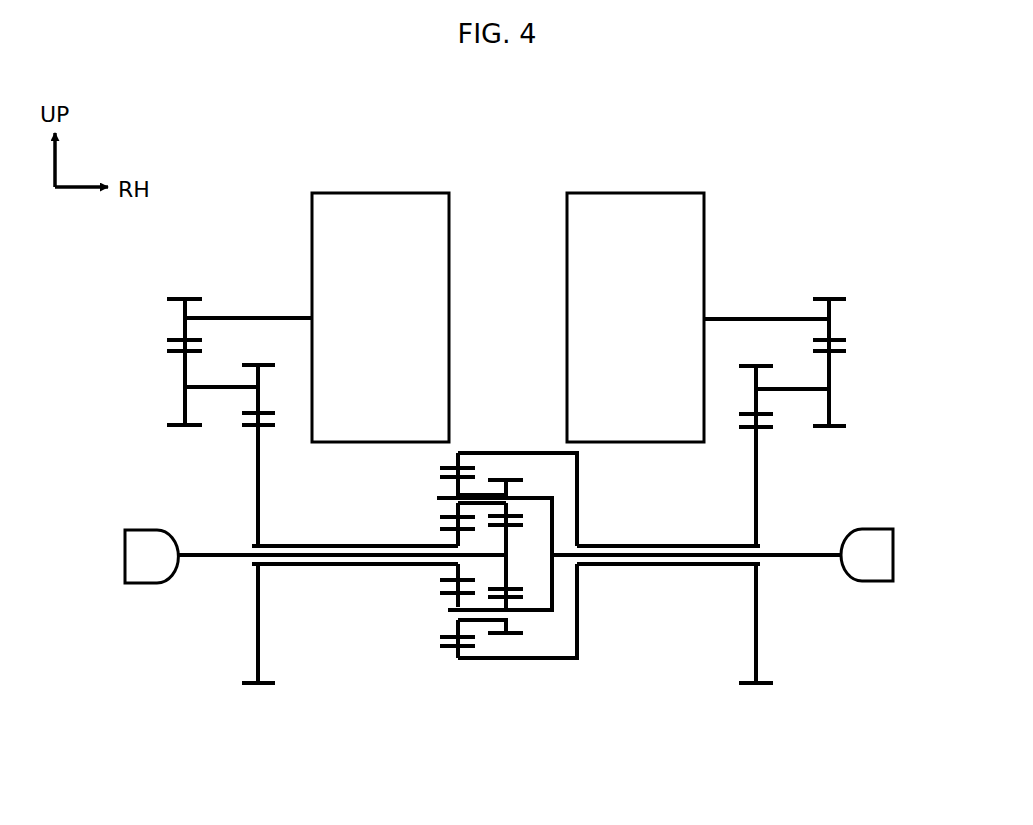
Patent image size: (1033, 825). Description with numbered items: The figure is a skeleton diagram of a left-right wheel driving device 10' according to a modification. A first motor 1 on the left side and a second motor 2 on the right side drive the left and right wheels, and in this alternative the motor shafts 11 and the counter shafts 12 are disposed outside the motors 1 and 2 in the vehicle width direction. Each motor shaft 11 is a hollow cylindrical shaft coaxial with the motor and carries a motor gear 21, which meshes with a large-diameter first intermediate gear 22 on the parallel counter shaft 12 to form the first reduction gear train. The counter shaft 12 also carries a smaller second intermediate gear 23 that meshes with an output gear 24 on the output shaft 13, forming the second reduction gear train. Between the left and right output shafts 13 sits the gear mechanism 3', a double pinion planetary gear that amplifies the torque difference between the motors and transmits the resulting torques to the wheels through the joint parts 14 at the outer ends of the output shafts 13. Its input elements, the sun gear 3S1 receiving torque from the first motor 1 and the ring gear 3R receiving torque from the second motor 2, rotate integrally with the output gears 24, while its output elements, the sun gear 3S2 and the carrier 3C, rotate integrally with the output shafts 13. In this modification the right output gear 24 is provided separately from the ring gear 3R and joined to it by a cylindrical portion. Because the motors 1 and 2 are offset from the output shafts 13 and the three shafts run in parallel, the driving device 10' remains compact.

The first motor 1 is at (718, 226).
The second motor 2 is at (302, 215).
The driving device 10' is at (894, 188).
The motor shaft 11 is at (272, 317).
The counter shaft 12 is at (226, 387).
The output shaft 13 is at (216, 558).
The joint part 14 is at (143, 583).
The motor gear 21 is at (175, 297).
The first intermediate gear 22 is at (182, 407).
The second intermediate gear 23 is at (268, 365).
The output gear 24 is at (259, 657).
The gear mechanism 3' is at (514, 604).
The ring gear 3R is at (458, 462).
The sun gear 3S1 is at (455, 574).
The sun gear 3S2 is at (508, 578).
The carrier 3C is at (535, 612).